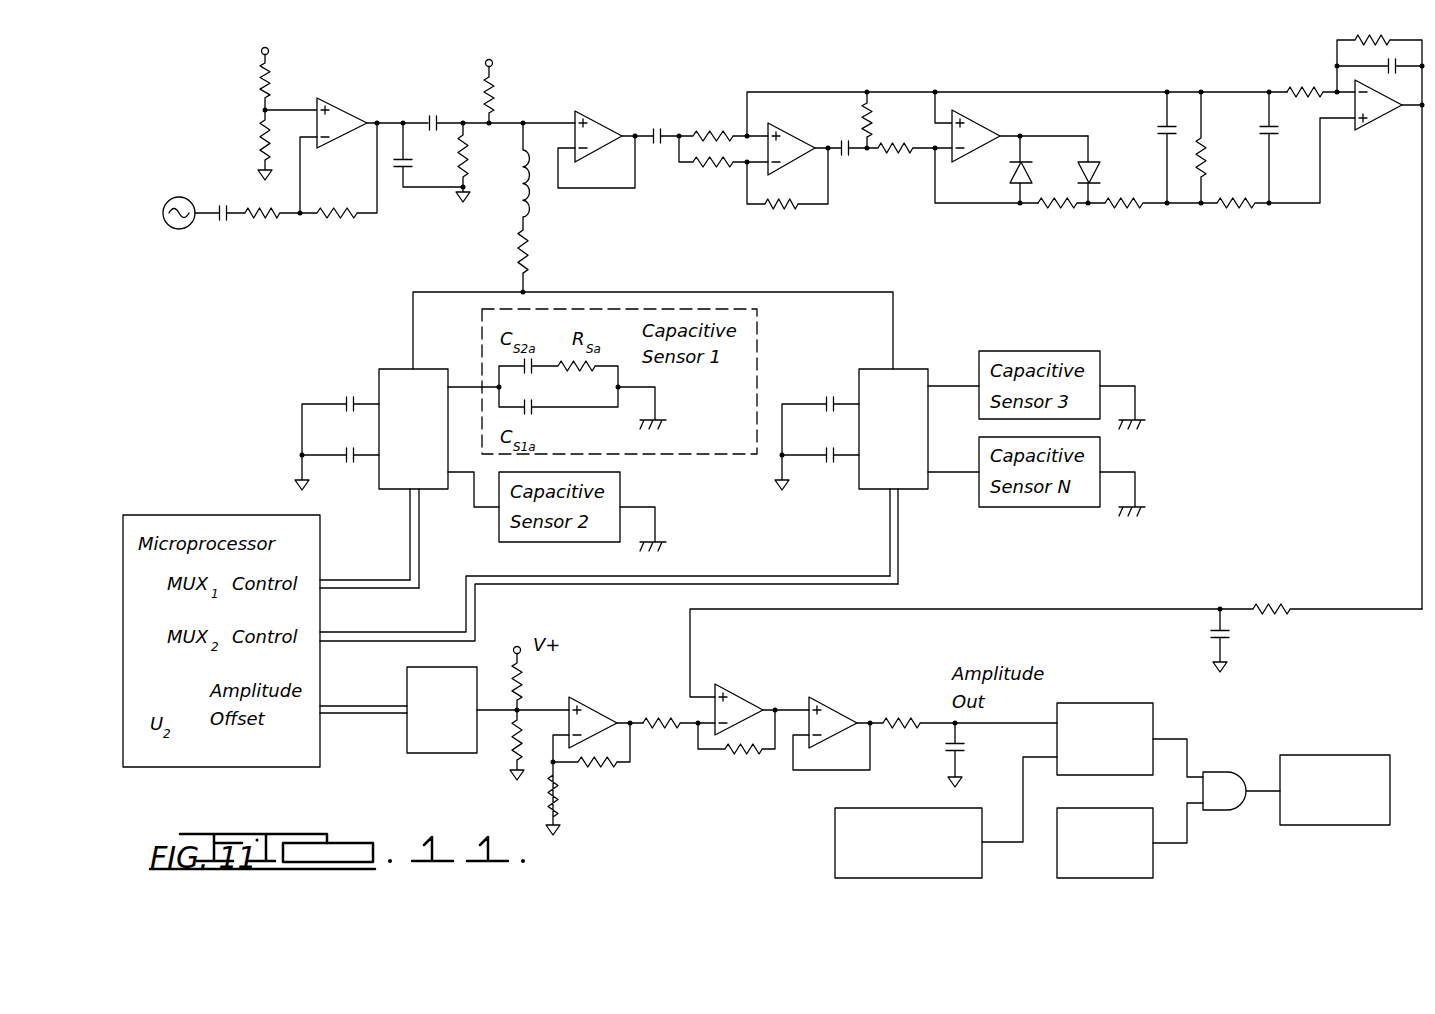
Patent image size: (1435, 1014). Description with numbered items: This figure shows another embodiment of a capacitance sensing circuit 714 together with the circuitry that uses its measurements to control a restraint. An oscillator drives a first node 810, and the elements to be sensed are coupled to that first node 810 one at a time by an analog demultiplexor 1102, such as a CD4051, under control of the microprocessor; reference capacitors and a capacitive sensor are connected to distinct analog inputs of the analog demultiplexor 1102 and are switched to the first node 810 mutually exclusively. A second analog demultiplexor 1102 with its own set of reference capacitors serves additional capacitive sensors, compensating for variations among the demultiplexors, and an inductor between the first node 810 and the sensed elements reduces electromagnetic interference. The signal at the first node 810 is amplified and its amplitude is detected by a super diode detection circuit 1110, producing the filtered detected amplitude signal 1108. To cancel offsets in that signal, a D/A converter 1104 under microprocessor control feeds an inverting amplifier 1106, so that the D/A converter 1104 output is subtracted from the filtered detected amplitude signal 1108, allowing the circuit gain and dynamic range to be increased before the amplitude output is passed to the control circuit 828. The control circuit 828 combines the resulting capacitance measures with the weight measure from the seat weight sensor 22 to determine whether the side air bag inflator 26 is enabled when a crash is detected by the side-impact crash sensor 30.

The first node 810 is at (538, 108).
The sensing circuit 714 is at (725, 82).
The super diode detection circuit 1110 is at (1088, 218).
The analog demultiplexor 1102 is at (387, 369).
The D/A converter 1104 is at (423, 753).
The inverting amplifier 1106 is at (705, 762).
The filtered detected amplitude signal 1108 is at (690, 633).
The control circuit 828 is at (1108, 703).
The seat weight sensor 22 is at (835, 847).
The side-impact crash sensor 30 is at (1153, 863).
The side air bag inflator 26 is at (1332, 755).